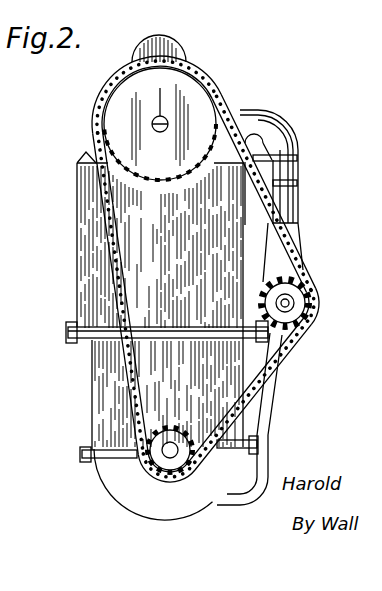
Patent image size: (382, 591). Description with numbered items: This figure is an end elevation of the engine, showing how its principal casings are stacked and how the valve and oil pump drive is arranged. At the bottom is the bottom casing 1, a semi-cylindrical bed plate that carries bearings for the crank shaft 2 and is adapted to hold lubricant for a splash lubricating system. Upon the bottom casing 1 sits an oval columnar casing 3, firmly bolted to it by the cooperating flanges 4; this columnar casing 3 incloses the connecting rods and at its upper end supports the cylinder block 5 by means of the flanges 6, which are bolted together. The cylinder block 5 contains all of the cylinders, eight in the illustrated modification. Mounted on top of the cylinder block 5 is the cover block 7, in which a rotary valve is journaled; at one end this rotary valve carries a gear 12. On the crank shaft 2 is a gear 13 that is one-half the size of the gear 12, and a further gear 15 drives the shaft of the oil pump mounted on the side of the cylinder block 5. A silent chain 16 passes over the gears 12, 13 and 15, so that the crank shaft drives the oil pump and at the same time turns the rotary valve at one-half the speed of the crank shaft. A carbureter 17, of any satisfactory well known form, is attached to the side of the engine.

The bottom casing 1 is at (120, 486).
The crank shaft 2 is at (168, 458).
The oval columnar casing 3 is at (100, 386).
The flanges 4 is at (82, 453).
The cylinder block 5 is at (84, 226).
The flanges 6 is at (68, 333).
The cover block 7 is at (88, 156).
The gear 12 is at (128, 84).
The gear 13 is at (166, 432).
The gear 15 is at (302, 290).
The silent chain 16 is at (298, 252).
The carbureter 17 is at (290, 204).